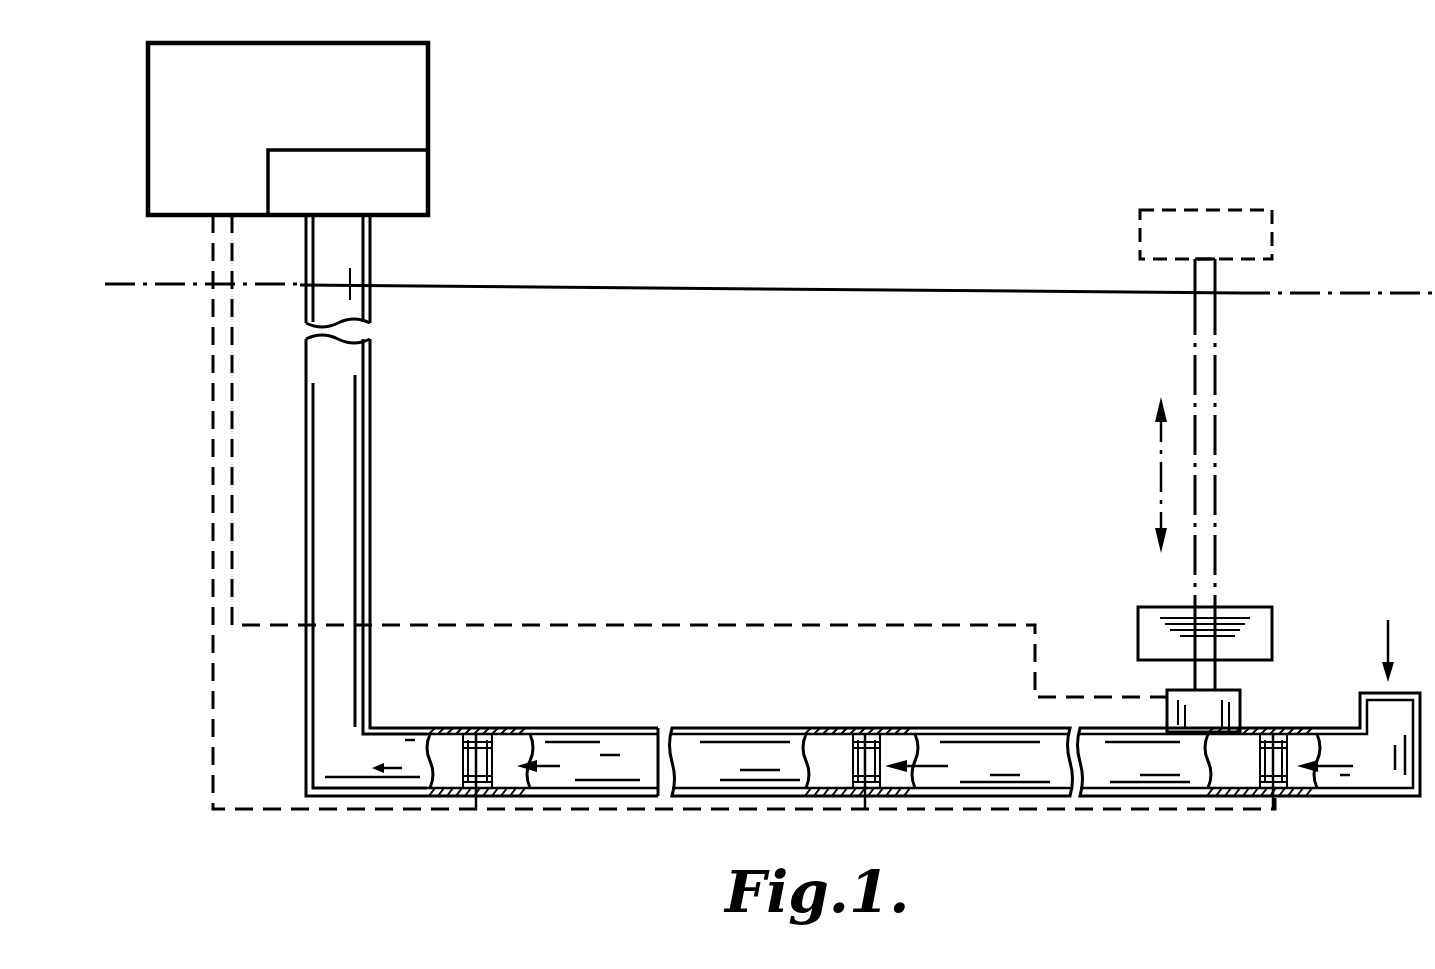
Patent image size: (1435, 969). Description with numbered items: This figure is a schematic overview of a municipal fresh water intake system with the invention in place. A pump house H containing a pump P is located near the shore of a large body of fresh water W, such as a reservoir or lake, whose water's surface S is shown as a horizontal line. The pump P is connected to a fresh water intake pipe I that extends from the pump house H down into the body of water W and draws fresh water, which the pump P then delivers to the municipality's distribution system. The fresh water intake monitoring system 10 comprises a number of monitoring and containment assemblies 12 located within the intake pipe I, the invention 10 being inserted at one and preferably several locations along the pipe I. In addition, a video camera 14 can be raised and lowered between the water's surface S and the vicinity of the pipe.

The pump house H is at (415, 89).
The pump P is at (405, 183).
The body of fresh water W is at (663, 312).
The water's surface S is at (826, 290).
The fresh water intake pipe I is at (580, 745).
The fresh water intake monitoring system 10 is at (880, 741).
The monitoring and containment assembly 12 is at (476, 734).
The video camera 14 is at (1181, 210).